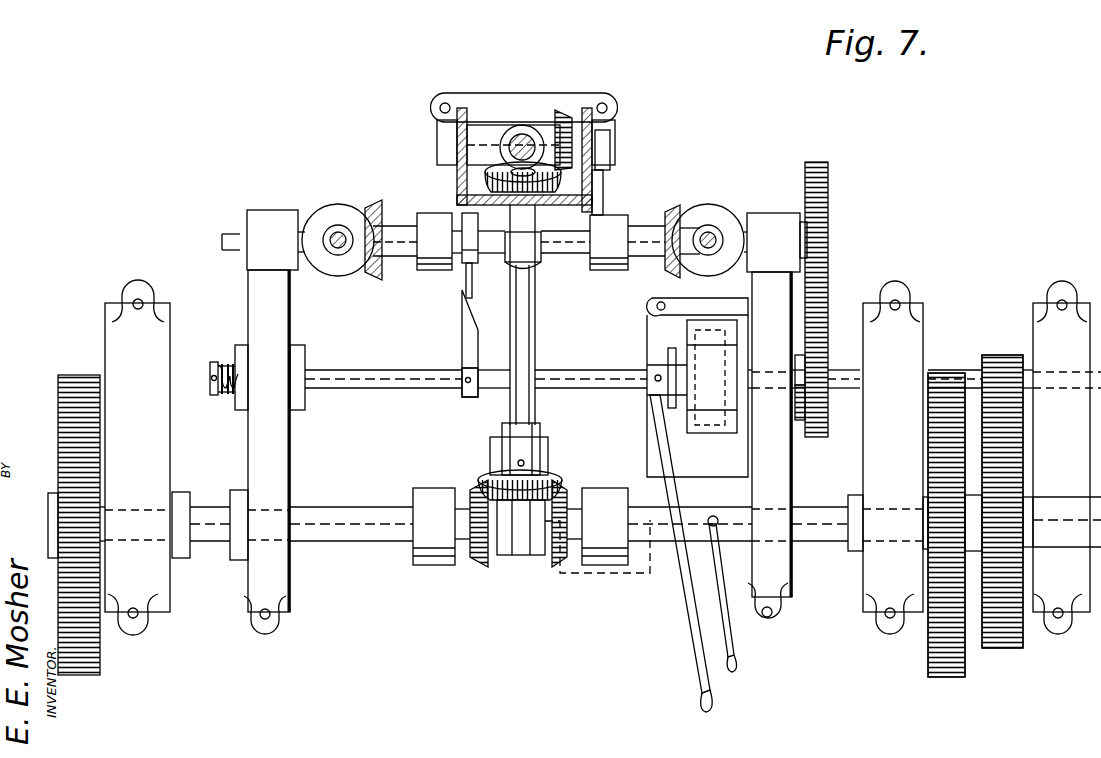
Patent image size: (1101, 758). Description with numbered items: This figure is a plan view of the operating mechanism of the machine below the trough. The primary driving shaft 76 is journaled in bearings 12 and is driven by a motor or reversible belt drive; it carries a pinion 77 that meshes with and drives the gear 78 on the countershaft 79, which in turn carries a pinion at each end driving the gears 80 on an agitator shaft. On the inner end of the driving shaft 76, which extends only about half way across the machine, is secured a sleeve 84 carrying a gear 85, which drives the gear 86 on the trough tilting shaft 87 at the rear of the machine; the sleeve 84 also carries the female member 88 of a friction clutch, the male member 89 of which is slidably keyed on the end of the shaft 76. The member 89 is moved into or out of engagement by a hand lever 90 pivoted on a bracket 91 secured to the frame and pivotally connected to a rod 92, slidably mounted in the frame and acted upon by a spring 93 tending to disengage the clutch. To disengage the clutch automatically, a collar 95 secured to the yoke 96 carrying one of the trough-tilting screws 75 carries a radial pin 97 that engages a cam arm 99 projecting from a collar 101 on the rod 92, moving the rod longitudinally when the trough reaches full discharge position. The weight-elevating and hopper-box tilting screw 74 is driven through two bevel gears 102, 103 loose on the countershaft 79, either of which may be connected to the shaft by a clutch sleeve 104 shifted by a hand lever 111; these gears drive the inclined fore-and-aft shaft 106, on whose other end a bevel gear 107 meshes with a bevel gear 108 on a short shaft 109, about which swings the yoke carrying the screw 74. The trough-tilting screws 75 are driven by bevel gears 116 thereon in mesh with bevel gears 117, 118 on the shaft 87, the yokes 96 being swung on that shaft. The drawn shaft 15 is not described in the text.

The bearings 12 is at (597, 422).
The shaft 15 is at (848, 388).
The weight-elevating and hopper-box tilting screw 74 is at (530, 140).
The trough-tilting screws 75 is at (338, 256).
The primary driving shaft 76 is at (942, 376).
The pinion 77 is at (998, 362).
The gear 78 is at (1000, 650).
The countershaft 79 is at (835, 541).
The gears 80 is at (58, 425).
The sleeve 84 is at (800, 420).
The gear 85 is at (805, 351).
The gear 86 is at (828, 225).
The trough tilting shaft 87 is at (562, 257).
The female clutch member 88 is at (722, 433).
The male clutch member 89 is at (682, 410).
The hand lever 90 is at (690, 648).
The bracket 91 is at (672, 315).
The rod 92 is at (382, 388).
The spring 93 is at (226, 395).
The collar 95 is at (478, 258).
The yoke 96 is at (427, 270).
The radial pin 97 is at (472, 293).
The cam arm 99 is at (478, 340).
The collar 101 is at (464, 397).
The bevel gear 102 is at (480, 567).
The bevel gear 103 is at (563, 570).
The clutch sleeve 104 is at (532, 555).
The inclined fore-and-aft shaft 106 is at (535, 346).
The bevel gear 107 is at (457, 180).
The bevel gear 108 is at (585, 118).
The short shaft 109 is at (493, 135).
The hand lever 111 is at (733, 635).
The bevel gears 116 is at (343, 212).
The bevel gear 117 is at (382, 210).
The bevel gear 118 is at (672, 206).